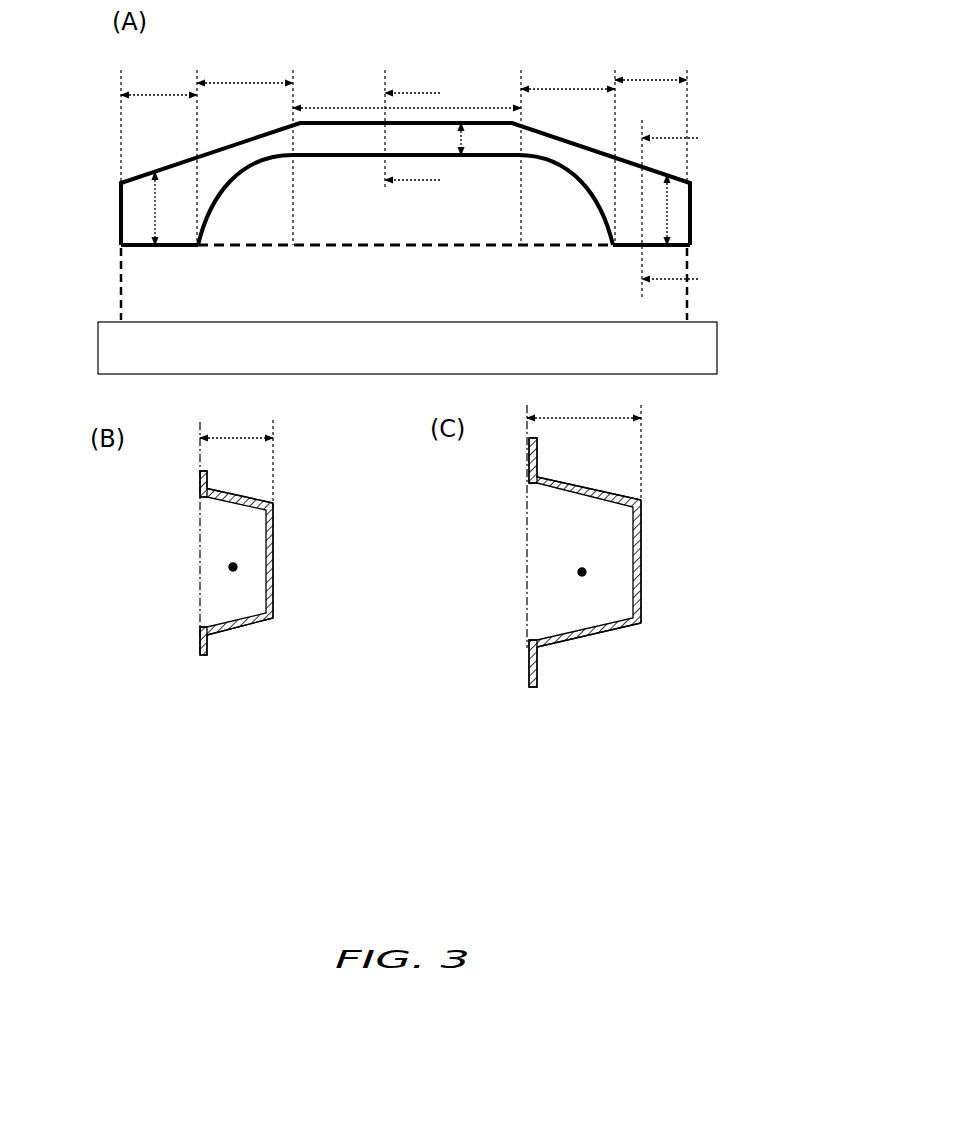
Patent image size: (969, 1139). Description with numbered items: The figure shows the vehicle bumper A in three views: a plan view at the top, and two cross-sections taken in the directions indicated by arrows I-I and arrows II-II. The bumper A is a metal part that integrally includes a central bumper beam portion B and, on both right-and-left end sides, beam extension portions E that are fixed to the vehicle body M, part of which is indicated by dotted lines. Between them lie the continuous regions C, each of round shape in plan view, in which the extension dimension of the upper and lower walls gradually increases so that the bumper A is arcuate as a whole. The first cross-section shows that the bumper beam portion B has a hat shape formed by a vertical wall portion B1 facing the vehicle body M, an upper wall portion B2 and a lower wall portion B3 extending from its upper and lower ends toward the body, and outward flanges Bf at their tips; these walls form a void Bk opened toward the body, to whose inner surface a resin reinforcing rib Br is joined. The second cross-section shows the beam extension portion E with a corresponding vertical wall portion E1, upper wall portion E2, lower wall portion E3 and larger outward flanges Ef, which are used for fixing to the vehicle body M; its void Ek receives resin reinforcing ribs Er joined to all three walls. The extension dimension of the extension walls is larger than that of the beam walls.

The vehicle bumper A is at (153, 163).
The bumper beam portion B is at (458, 108).
The continuous region C is at (243, 83).
The beam extension portion E is at (165, 95).
The arrows I- I is at (409, 142).
The arrows II- II is at (665, 207).
The vehicle body M is at (121, 297).
The outward flange Bf is at (200, 484).
The resin reinforcing rib Br is at (200, 543).
The void Bk is at (233, 572).
The vertical wall portion B1 is at (273, 558).
The upper wall portion B2 is at (240, 497).
The lower wall portion B3 is at (260, 627).
The outward flange Ef is at (530, 466).
The resin reinforcing rib Er is at (525, 538).
The void Ek is at (582, 577).
The vertical wall portion E1 is at (641, 553).
The upper wall portion E2 is at (590, 483).
The lower wall portion E3 is at (620, 627).